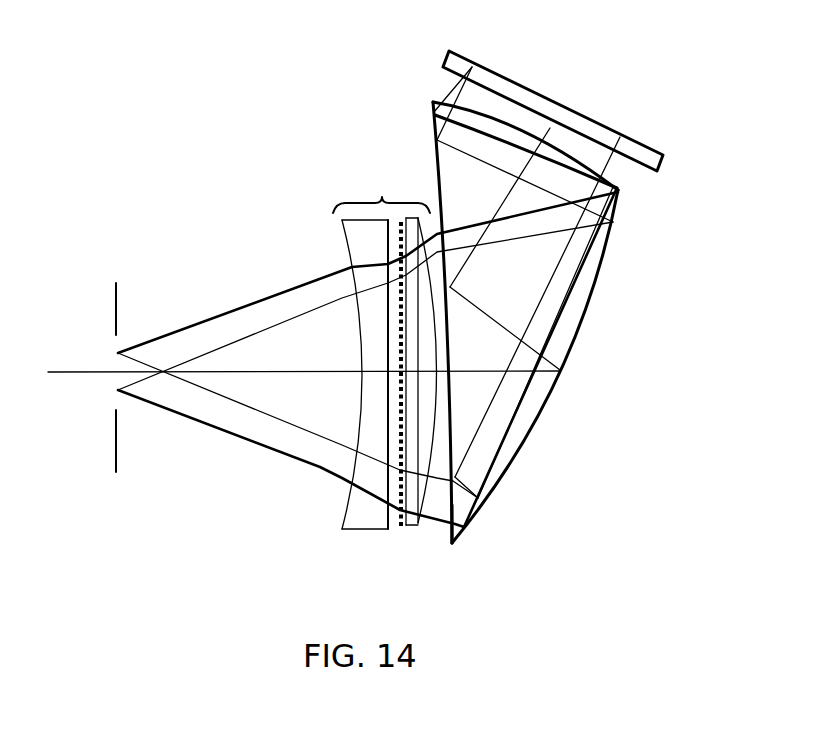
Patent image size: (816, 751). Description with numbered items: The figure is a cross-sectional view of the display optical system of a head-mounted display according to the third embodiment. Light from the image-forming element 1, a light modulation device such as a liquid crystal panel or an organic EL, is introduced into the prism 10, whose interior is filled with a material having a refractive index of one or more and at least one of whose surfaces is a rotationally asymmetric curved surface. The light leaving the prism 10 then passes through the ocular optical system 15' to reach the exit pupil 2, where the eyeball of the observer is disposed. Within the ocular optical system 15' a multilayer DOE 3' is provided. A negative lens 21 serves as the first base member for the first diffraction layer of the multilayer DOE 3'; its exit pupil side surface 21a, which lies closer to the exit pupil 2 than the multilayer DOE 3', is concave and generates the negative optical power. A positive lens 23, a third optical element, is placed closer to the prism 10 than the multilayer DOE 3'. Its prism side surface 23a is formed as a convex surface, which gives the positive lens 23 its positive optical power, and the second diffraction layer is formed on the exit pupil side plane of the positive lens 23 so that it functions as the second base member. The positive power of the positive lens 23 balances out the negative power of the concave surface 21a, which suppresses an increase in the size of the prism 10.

The image-forming element 1 is at (570, 112).
The exit pupil 2 is at (113, 297).
The prism 10 is at (567, 298).
The ocular optical system 15' is at (381, 188).
The negative lens 21 is at (373, 232).
The exit pupil side surface 21a is at (360, 510).
The positive lens 23 is at (420, 300).
The prism side surface 23a is at (453, 543).
The multilayer DOE 3' is at (371, 410).